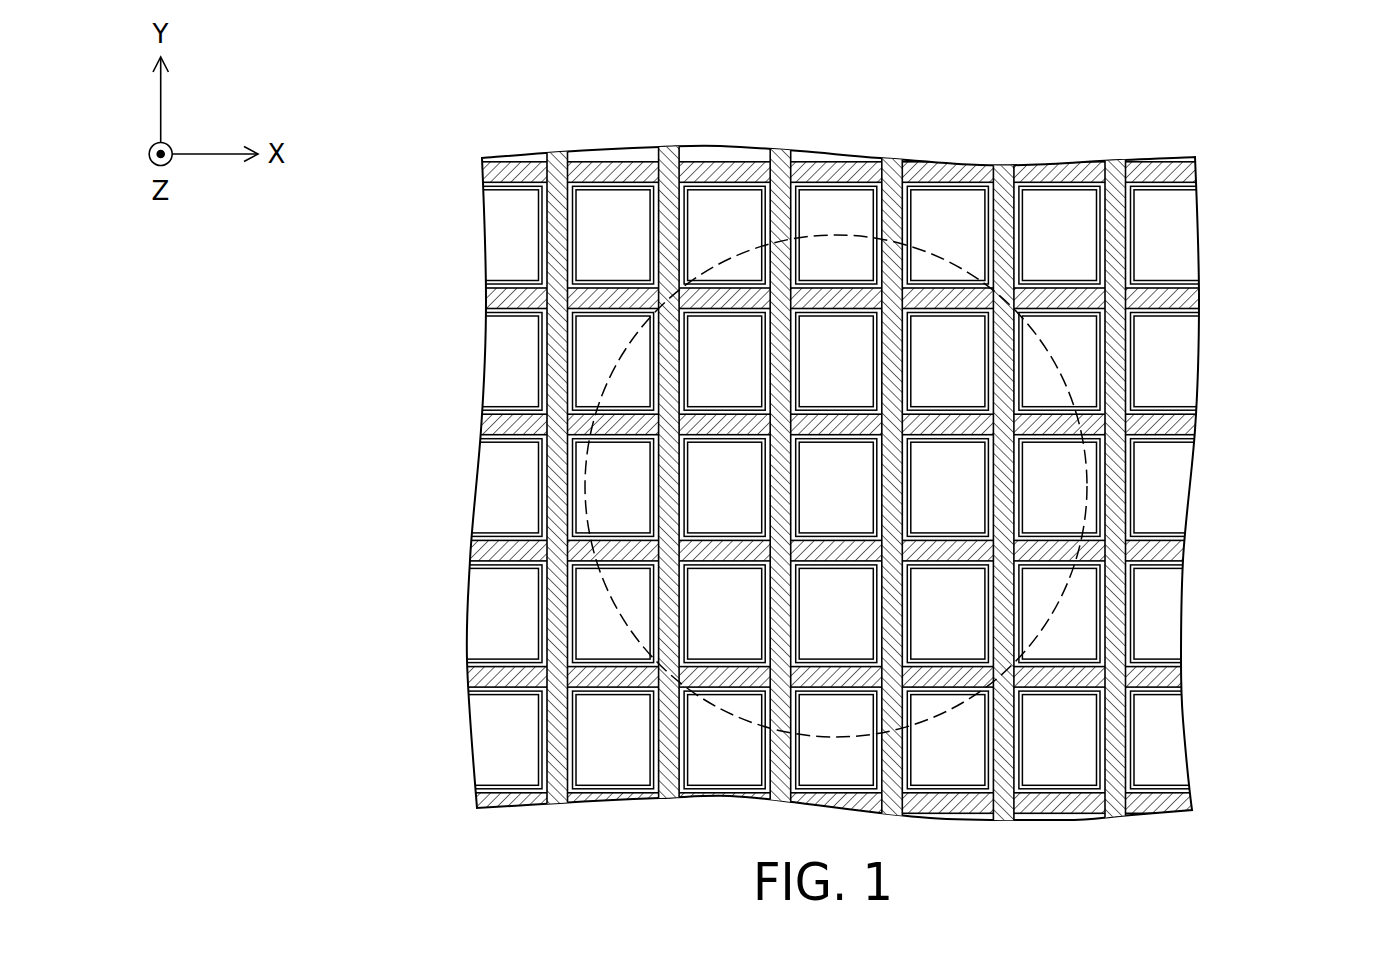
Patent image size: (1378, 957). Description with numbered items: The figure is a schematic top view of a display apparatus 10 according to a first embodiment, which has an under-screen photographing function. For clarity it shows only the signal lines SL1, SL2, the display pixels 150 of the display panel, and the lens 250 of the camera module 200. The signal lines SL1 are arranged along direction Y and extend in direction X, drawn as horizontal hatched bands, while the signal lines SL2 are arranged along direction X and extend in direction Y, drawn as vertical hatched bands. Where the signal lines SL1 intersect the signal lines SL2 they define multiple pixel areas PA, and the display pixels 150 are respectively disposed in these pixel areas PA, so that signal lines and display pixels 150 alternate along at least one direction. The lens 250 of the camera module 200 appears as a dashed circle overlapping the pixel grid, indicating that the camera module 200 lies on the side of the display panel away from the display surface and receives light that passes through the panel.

The display apparatus 10 is at (1324, 813).
The pixel area PA is at (572, 188).
The display pixel 150 is at (829, 188).
The signal line SL1 is at (1165, 175).
The signal line SL2 is at (1117, 167).
The lens 250 is at (736, 256).
The camera module 200 is at (836, 389).